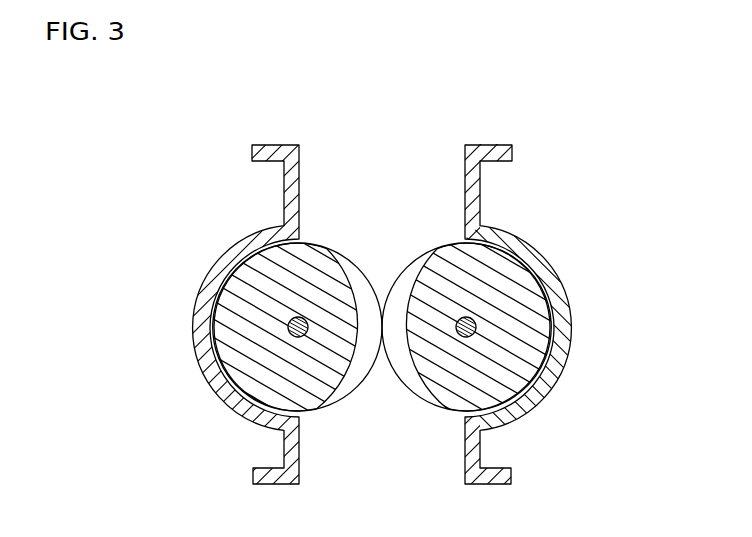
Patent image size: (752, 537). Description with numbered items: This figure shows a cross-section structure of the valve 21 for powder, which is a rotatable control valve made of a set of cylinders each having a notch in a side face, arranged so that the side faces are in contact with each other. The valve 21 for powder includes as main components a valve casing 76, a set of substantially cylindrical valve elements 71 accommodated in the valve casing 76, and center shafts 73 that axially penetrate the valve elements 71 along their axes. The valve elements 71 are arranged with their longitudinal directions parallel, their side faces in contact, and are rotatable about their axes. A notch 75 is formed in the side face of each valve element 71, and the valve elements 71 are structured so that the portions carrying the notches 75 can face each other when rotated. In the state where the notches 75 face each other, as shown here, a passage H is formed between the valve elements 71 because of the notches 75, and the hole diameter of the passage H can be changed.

The valve for powder 21 is at (584, 104).
The valve elements 71 is at (233, 292).
The center shafts 73 is at (289, 325).
The notch 75 is at (357, 290).
The valve casing 76 is at (240, 250).
The passage H is at (378, 280).